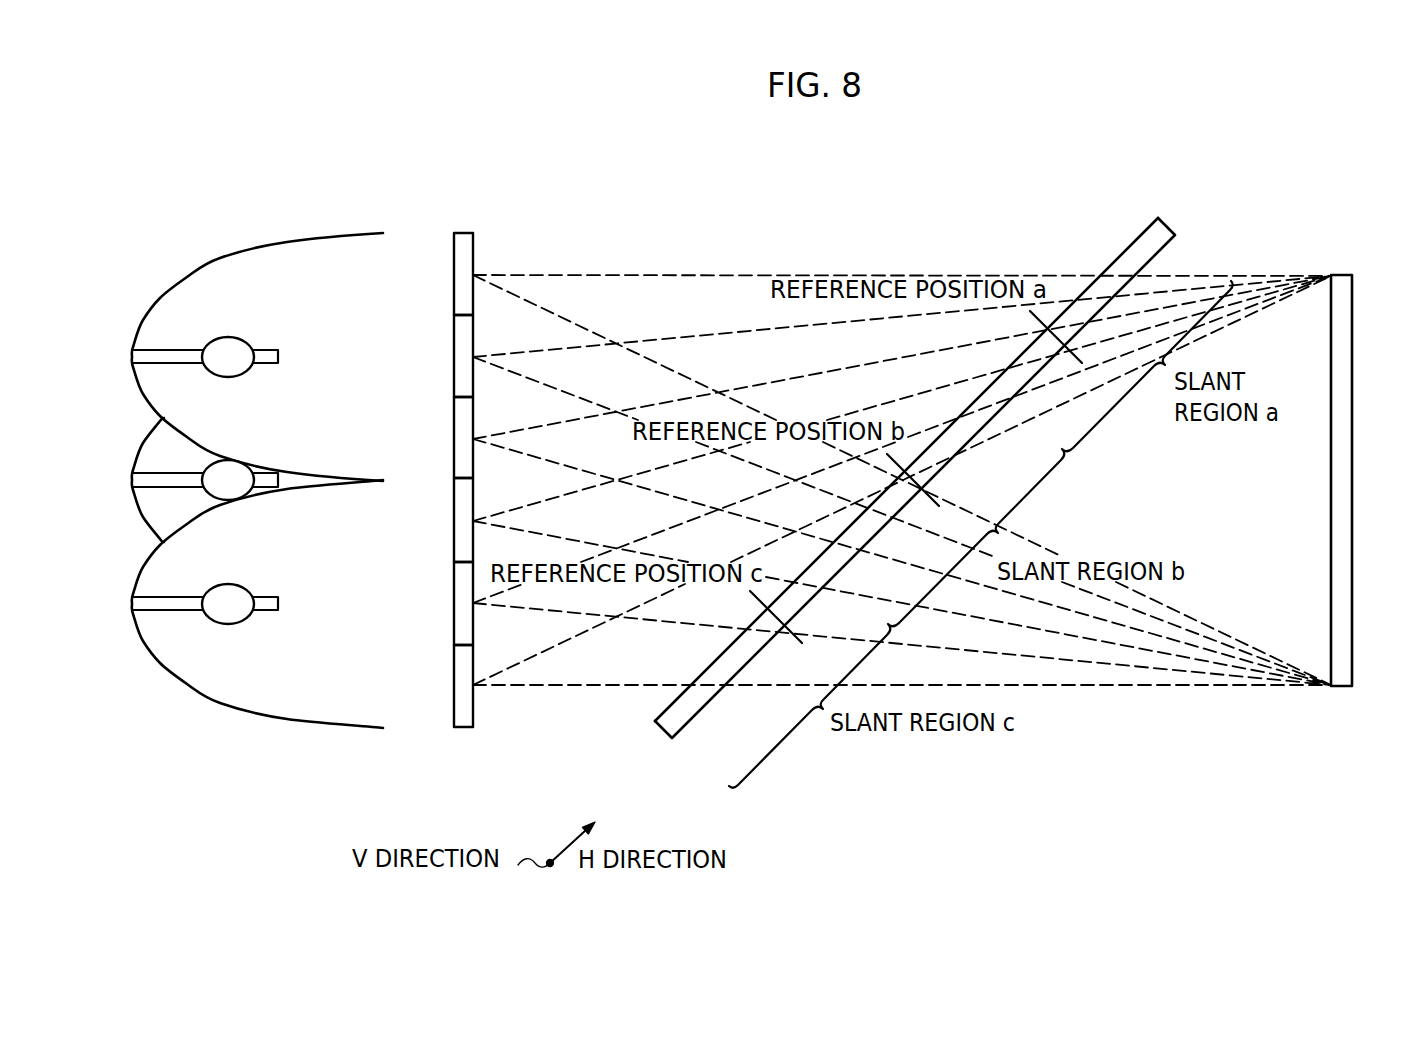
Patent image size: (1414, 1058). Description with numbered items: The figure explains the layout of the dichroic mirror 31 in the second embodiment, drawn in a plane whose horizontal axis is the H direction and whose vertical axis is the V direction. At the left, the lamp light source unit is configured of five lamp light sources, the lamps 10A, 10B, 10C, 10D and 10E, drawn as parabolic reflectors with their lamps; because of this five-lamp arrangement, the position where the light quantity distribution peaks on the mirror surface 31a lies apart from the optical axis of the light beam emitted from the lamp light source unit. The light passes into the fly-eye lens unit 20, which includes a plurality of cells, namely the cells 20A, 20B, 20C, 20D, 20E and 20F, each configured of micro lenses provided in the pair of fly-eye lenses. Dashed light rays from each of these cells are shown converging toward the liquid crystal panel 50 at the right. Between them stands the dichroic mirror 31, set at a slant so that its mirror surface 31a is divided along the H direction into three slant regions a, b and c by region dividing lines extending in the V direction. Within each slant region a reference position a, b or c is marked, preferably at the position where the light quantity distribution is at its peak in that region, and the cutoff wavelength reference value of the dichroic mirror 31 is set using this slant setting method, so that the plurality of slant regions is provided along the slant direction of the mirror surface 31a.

The lamp 10A is at (292, 256).
The lamp 10B is at (258, 700).
The lamp 10C is at (257, 624).
The lamp 10D is at (257, 334).
The lamp 10E is at (157, 512).
The fly-eye lens unit 20 is at (444, 422).
The cell 20A is at (456, 283).
The cell 20B is at (456, 361).
The cell 20C is at (456, 440).
The cell 20D is at (456, 520).
The cell 20E is at (456, 600).
The cell 20F is at (456, 680).
The dichroic mirror 31 is at (930, 460).
The mirror surface 31a is at (1133, 243).
The liquid crystal panel 50 is at (1352, 513).